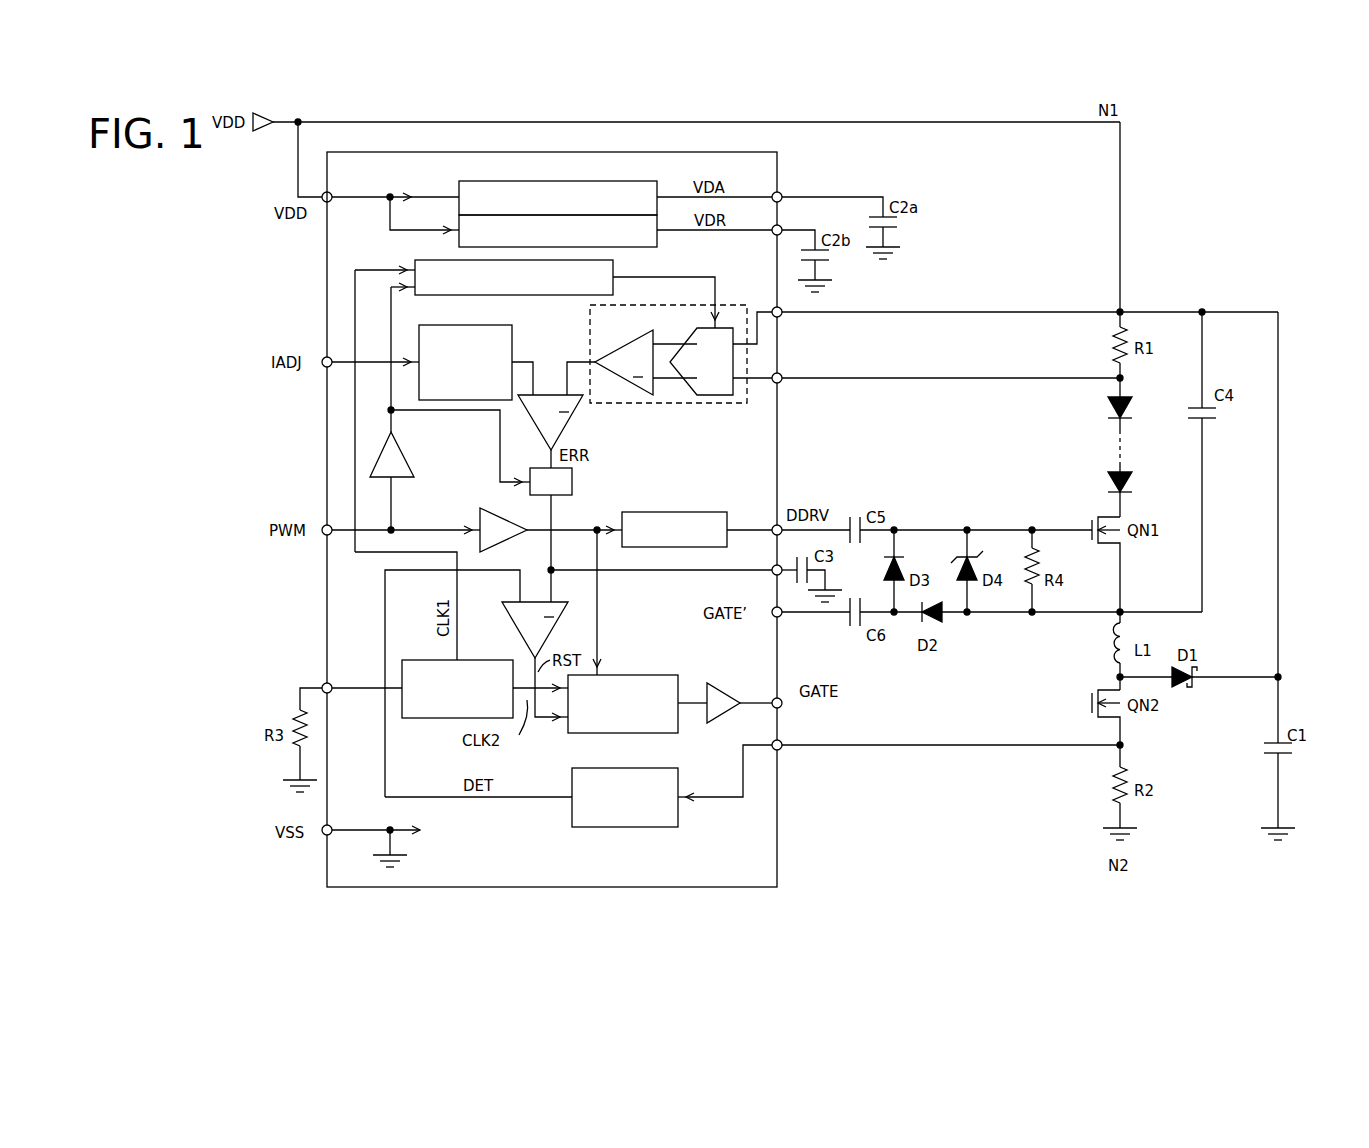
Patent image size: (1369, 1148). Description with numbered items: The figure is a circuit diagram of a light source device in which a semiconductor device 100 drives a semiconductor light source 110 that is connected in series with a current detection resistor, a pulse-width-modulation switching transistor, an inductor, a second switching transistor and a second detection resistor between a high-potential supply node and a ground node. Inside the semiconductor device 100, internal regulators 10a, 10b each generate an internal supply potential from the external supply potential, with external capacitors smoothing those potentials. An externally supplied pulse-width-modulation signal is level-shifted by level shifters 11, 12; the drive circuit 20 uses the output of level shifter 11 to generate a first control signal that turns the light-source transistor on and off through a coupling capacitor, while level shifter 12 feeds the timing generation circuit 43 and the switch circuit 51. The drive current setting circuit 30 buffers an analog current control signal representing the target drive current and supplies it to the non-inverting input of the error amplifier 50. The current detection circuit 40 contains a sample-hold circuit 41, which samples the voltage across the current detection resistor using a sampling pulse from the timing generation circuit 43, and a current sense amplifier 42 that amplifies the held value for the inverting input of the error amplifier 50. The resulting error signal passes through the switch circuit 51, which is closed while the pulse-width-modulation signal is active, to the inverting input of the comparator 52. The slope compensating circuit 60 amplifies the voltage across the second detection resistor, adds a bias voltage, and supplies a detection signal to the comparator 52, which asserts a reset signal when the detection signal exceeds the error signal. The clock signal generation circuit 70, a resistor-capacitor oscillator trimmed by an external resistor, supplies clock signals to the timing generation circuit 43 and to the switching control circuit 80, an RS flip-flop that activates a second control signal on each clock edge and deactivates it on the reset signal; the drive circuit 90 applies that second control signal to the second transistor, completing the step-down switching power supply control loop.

The semiconductor device 100 is at (490, 152).
The internal regulator 10a is at (600, 181).
The internal regulator 10b is at (657, 247).
The level shifter 11 is at (510, 545).
The level shifter 12 is at (405, 455).
The drive circuit 20 is at (680, 512).
The drive current setting circuit 30 is at (512, 345).
The current detection circuit 40 is at (733, 305).
The sample-hold circuit 41 is at (683, 336).
The current sense amplifier 42 is at (628, 344).
The timing generation circuit 43 is at (445, 295).
The error amplifier 50 is at (575, 420).
The switch circuit 51 is at (572, 483).
The comparator 52 is at (548, 635).
The slope compensating circuit 60 is at (650, 768).
The clock signal generation circuit 70 is at (470, 660).
The switching control circuit 80 is at (645, 675).
The drive circuit 90 is at (728, 693).
The semiconductor light source 110 is at (1138, 393).